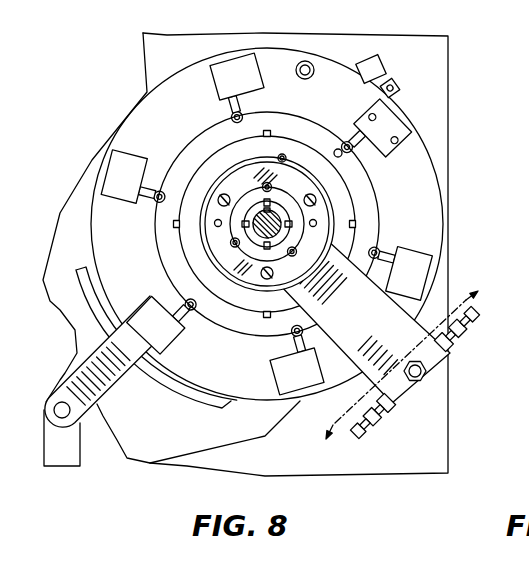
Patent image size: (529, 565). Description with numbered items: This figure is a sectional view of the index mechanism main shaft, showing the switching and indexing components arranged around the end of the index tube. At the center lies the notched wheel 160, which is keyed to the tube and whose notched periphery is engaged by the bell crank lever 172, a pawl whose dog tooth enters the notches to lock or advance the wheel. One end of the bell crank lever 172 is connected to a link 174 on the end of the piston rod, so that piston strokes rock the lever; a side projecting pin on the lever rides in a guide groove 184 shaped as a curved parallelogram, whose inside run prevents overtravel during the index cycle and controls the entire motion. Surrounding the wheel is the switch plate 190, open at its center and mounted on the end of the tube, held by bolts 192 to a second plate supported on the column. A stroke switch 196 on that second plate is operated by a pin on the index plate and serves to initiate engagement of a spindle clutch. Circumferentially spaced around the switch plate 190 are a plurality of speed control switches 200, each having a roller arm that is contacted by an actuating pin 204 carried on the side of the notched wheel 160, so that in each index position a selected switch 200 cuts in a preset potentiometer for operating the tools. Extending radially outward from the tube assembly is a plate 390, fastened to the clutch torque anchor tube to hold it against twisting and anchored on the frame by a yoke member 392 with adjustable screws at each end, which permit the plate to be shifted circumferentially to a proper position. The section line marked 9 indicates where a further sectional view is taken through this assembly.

The notched wheel 160 is at (370, 220).
The bell crank lever 172 is at (110, 391).
The link 174 is at (79, 457).
The guide groove 184 is at (178, 400).
The switch plate 190 is at (420, 160).
The bolts 192 is at (313, 66).
The stroke switch 196 is at (379, 66).
The speed control switches 200 is at (398, 112).
The actuating pin 204 is at (337, 149).
The plate 390 is at (402, 331).
The yoke member 392 is at (458, 343).
The section line 9- 9 is at (410, 374).